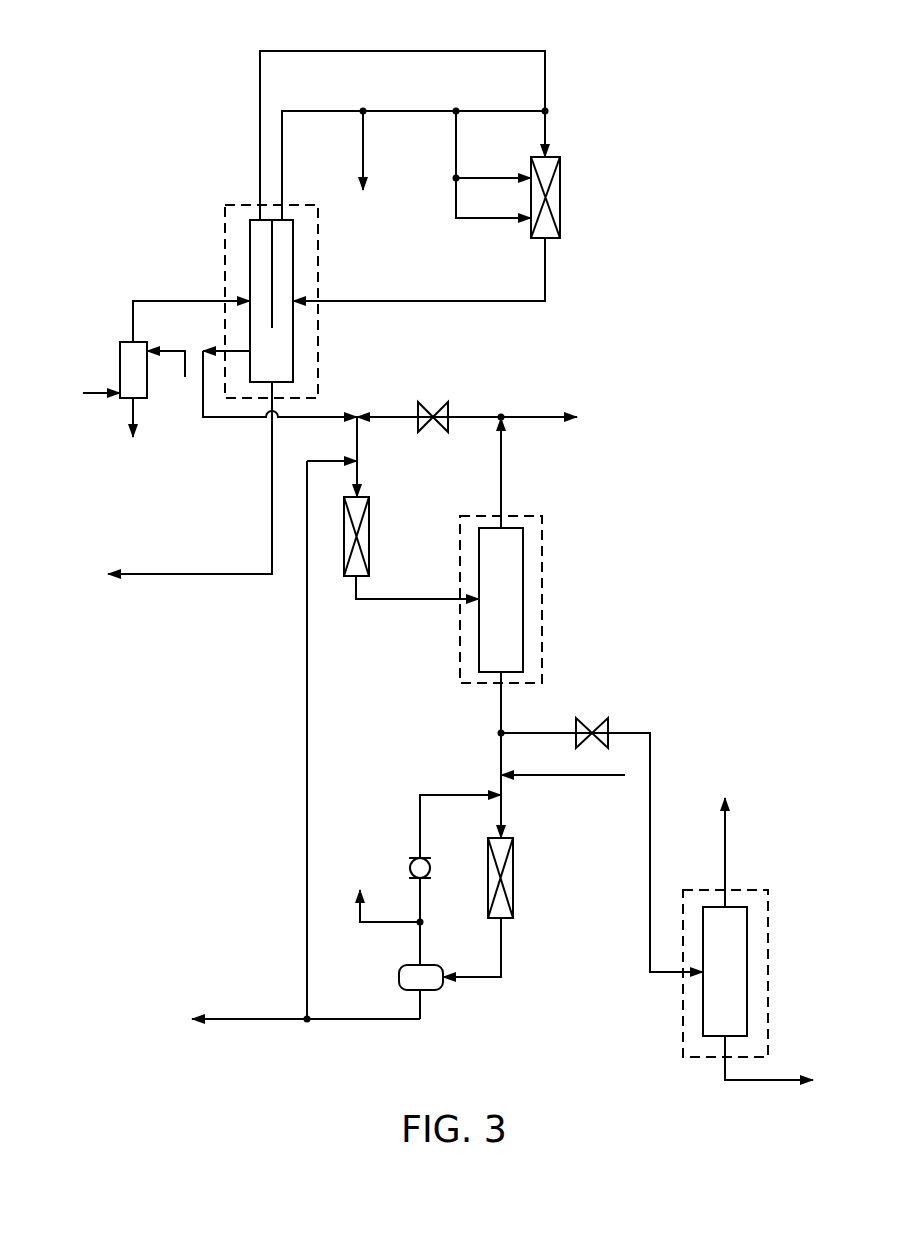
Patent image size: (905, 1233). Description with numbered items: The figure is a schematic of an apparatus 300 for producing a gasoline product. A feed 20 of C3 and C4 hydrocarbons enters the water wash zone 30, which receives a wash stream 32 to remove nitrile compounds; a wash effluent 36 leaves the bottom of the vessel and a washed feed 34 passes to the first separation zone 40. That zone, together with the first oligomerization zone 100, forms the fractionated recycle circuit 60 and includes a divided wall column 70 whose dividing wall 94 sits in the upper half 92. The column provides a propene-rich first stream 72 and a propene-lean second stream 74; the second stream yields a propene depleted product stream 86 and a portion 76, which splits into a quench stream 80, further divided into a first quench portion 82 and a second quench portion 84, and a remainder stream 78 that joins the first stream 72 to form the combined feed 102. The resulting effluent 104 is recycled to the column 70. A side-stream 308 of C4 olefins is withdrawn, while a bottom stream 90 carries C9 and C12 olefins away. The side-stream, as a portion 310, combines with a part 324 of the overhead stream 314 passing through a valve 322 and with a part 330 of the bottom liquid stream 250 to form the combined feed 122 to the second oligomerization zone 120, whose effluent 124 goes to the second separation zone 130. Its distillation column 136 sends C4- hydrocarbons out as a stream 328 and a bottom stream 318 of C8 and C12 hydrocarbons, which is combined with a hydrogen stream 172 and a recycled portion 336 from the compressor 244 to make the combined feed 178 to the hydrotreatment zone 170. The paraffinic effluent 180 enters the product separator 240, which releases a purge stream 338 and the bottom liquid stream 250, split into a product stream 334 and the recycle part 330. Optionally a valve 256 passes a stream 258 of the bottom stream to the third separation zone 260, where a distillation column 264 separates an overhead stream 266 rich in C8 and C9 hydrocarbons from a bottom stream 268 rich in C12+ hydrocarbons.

The apparatus 300 is at (702, 46).
The fractionated recycle circuit 60 is at (579, 61).
The first stream 72 is at (258, 95).
The second stream 74 is at (284, 176).
The portion 76 is at (407, 109).
The remainder stream 78 is at (495, 109).
The quench stream 80 is at (454, 137).
The first quench portion 82 is at (495, 176).
The second quench portion 84 is at (494, 221).
The propene depleted product stream 86 is at (361, 137).
The first oligomerization zone 100 is at (562, 197).
The combined feed 102 is at (547, 133).
The effluent 104 is at (547, 291).
The first separation zone 40 is at (225, 206).
The divided wall column 70 is at (271, 301).
The dividing wall 94 is at (274, 265).
The upper half 92 is at (333, 314).
The water wash zone 30 is at (121, 342).
The washed feed 34 is at (160, 299).
The wash stream 32 is at (176, 349).
The feed 20 is at (93, 401).
The wash effluent 36 is at (136, 412).
The side-stream 308 is at (216, 419).
The bottom stream 90 is at (221, 576).
The part 324 is at (394, 412).
The valve 322 is at (438, 402).
The stream 328 is at (530, 412).
The overhead stream 314 is at (503, 478).
The part 330 is at (306, 740).
The portion 310 is at (359, 454).
The combined feed 122 is at (359, 479).
The second oligomerization zone 120 is at (371, 518).
The effluent 124 is at (356, 598).
The second separation zone 130 is at (544, 529).
The distillation column 136 is at (501, 600).
The bottom stream 318 is at (503, 703).
The combined feed 178 is at (503, 821).
The stream 258 is at (650, 732).
The valve 256 is at (597, 718).
The hydrogen stream 172 is at (607, 776).
The portion 336 is at (440, 793).
The compressor 244 is at (412, 858).
The purge stream 338 is at (367, 924).
The product separator 240 is at (430, 965).
The hydrotreatment zone 170 is at (515, 878).
The effluent 180 is at (505, 966).
The bottom liquid stream 250 is at (373, 1022).
The product stream 334 is at (256, 1022).
The third separation zone 260 is at (770, 921).
The distillation column 264 is at (725, 971).
The overhead stream 266 is at (728, 838).
The bottom stream 268 is at (718, 1079).